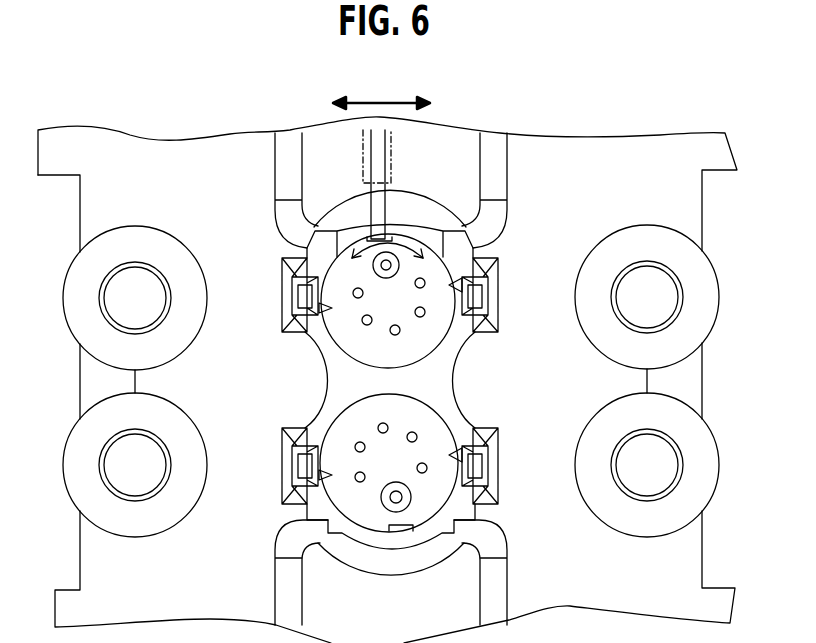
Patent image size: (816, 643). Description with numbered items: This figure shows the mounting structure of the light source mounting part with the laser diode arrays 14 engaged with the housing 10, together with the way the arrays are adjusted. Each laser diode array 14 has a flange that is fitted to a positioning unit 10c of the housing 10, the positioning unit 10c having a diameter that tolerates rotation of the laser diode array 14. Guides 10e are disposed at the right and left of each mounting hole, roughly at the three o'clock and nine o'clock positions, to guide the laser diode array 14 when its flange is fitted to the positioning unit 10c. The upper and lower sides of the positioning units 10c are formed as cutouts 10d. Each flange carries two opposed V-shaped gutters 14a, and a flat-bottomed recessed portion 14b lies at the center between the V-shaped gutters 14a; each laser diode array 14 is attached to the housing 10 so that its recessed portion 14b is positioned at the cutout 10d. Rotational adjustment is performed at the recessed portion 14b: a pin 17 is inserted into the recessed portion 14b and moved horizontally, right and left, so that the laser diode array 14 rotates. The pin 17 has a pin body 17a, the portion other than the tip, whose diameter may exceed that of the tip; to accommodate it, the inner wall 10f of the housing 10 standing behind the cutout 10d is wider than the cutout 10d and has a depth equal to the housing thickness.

The housing 10 is at (634, 197).
The positioning unit 10c is at (312, 247).
The cutout 10d is at (411, 207).
The guide 10e is at (300, 297).
The inner wall 10f is at (474, 197).
The laser diode array 14 is at (447, 430).
The V-shaped gutter 14a is at (322, 312).
The recessed portion 14b is at (372, 236).
The pin 17 is at (386, 150).
The pin body 17a is at (360, 160).